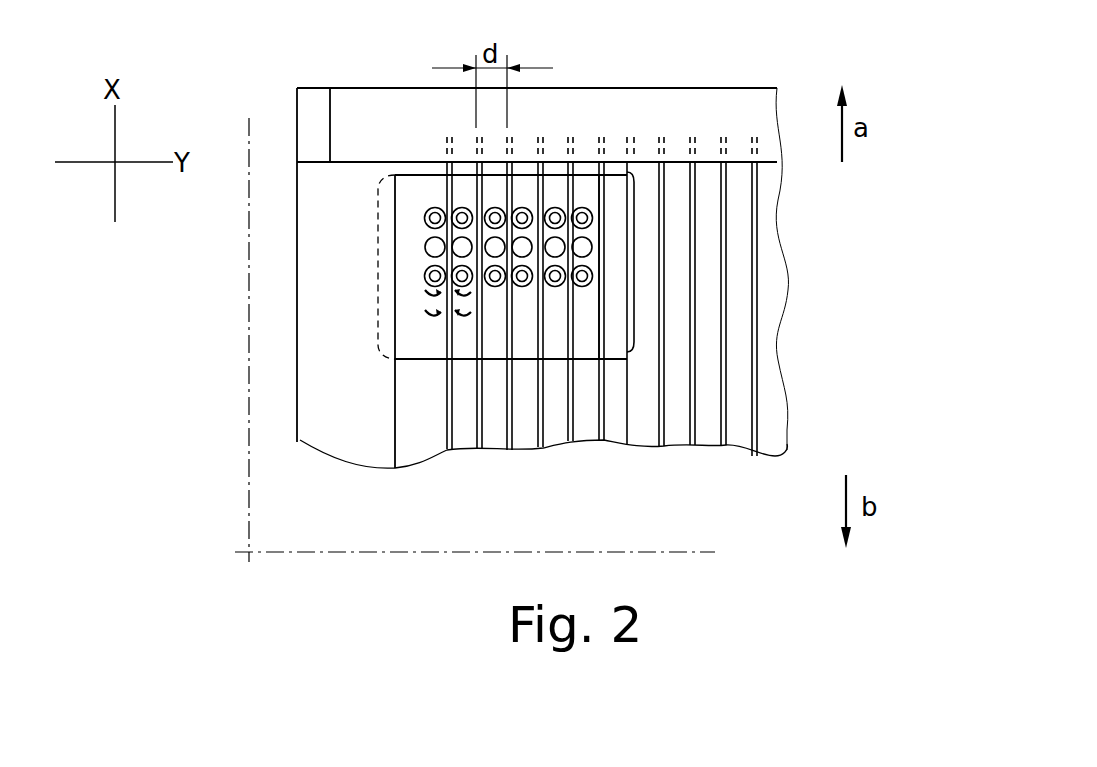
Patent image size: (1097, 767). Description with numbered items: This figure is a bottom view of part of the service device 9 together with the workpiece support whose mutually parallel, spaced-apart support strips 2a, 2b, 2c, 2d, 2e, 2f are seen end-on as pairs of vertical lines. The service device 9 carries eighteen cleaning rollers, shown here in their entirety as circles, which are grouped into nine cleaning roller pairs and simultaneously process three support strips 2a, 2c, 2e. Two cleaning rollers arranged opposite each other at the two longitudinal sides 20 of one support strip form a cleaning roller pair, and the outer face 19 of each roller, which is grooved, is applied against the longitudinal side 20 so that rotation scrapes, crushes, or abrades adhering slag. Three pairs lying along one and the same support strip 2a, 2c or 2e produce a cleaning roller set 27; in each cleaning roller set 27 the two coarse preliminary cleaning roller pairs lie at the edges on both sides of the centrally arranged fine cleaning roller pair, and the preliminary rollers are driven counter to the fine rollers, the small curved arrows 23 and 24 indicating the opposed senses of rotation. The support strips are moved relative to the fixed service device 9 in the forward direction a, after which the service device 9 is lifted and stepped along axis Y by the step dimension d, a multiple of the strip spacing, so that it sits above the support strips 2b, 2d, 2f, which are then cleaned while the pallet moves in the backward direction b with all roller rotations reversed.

The support strip 2a is at (448, 449).
The support strip 2b is at (478, 449).
The support strip 2c is at (510, 450).
The support strip 2d is at (541, 442).
The support strip 2e is at (570, 440).
The support strip 2f is at (601, 440).
The service device 9 is at (640, 178).
The outer face 19 is at (427, 275).
The longitudinal side 20 is at (447, 411).
The air flow direction (first) 23 is at (424, 297).
The air flow direction (second) 24 is at (424, 317).
The cleaning roller set 27 is at (595, 237).